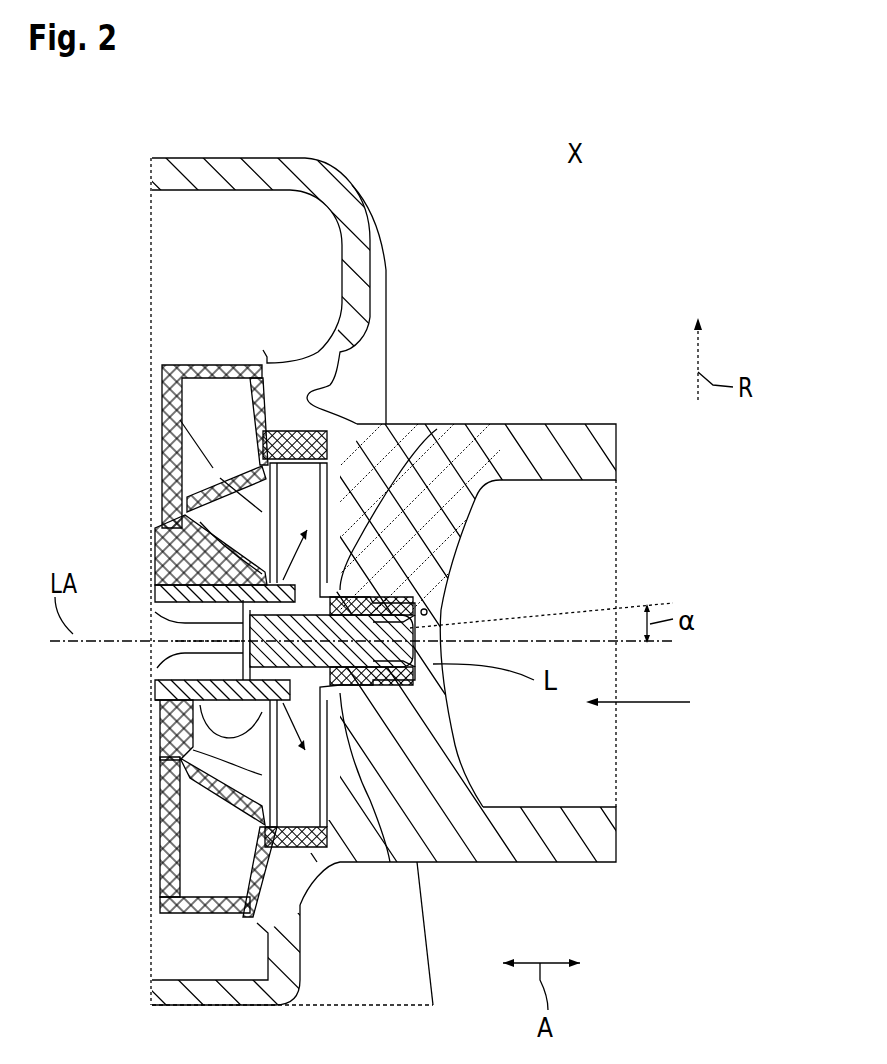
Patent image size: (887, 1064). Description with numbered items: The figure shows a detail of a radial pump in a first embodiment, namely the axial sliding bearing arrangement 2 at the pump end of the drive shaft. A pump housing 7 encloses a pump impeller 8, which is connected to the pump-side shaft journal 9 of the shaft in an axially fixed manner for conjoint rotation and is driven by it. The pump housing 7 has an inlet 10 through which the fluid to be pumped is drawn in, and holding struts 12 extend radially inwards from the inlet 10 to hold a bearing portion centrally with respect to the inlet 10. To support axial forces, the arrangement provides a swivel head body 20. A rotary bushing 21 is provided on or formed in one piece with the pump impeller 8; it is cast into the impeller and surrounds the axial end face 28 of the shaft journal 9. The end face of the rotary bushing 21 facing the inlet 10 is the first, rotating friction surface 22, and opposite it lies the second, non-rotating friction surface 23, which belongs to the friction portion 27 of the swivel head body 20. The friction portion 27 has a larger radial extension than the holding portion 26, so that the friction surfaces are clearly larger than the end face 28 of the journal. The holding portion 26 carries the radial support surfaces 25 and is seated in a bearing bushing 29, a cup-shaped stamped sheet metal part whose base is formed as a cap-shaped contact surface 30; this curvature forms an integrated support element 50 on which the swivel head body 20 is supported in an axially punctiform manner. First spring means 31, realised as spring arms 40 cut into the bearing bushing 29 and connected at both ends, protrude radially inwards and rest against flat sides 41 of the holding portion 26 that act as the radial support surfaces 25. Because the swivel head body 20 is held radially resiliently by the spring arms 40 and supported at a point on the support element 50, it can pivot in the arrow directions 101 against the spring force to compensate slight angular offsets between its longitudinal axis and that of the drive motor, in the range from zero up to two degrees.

The axial sliding bearing arrangement 2 is at (417, 323).
The pump housing 7 is at (236, 178).
The pump impeller 8 is at (155, 755).
The pump-side shaft journal 9 is at (148, 636).
The inlet 10 is at (660, 702).
The holding struts 12 is at (478, 535).
The swivel head body 20 is at (425, 604).
The rotary bushing 21 is at (150, 690).
The first, rotating friction surface 22 is at (200, 592).
The second, non-rotating friction surface 23 is at (157, 668).
The radial support surfaces 25 is at (322, 800).
The holding portion 26 is at (323, 463).
The friction portion 27 is at (260, 462).
The axial end face of the shaft journal 28 is at (155, 612).
The bearing bushing 29 is at (452, 715).
The contact surface 30 is at (447, 635).
The first spring means 31 is at (390, 862).
The spring arms 40 is at (415, 597).
The flat sides 41 is at (395, 560).
The support element 50 is at (455, 624).
The arrow directions 101 is at (200, 465).